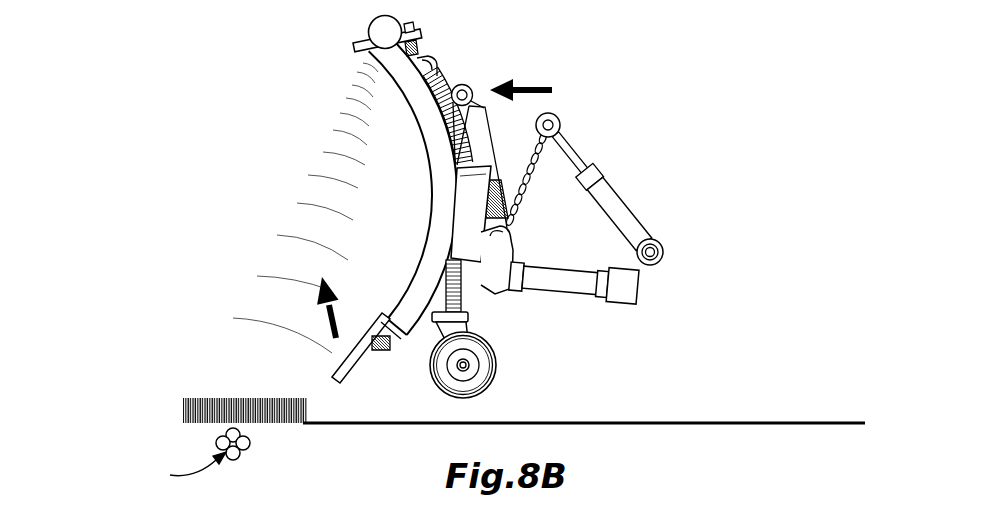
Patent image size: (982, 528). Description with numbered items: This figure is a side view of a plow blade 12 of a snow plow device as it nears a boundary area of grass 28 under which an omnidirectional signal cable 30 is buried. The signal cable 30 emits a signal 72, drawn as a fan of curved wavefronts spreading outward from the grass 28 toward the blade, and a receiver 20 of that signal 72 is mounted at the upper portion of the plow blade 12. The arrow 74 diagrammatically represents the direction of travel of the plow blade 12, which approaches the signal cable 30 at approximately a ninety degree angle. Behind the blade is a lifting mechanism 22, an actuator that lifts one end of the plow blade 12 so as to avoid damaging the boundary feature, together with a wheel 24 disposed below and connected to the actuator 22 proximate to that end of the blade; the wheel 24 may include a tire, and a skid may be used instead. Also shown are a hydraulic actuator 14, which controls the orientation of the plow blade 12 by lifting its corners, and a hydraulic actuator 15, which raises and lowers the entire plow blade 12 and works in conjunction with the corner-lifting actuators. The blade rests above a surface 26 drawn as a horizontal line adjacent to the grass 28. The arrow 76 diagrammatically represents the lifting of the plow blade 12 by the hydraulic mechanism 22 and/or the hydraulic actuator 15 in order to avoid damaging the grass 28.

The plow blade 12 is at (415, 78).
The hydraulic actuator 14 is at (625, 290).
The hydraulic actuator 15 is at (612, 200).
The receiver 20 is at (368, 29).
The lifting mechanism 22 is at (472, 196).
The wheel 24 is at (480, 377).
The ground surface 26 is at (402, 426).
The grass 28 is at (200, 412).
The signal cable 30 is at (247, 447).
The signal 72 is at (288, 235).
The arrow 74 is at (531, 92).
The arrow 76 is at (338, 322).